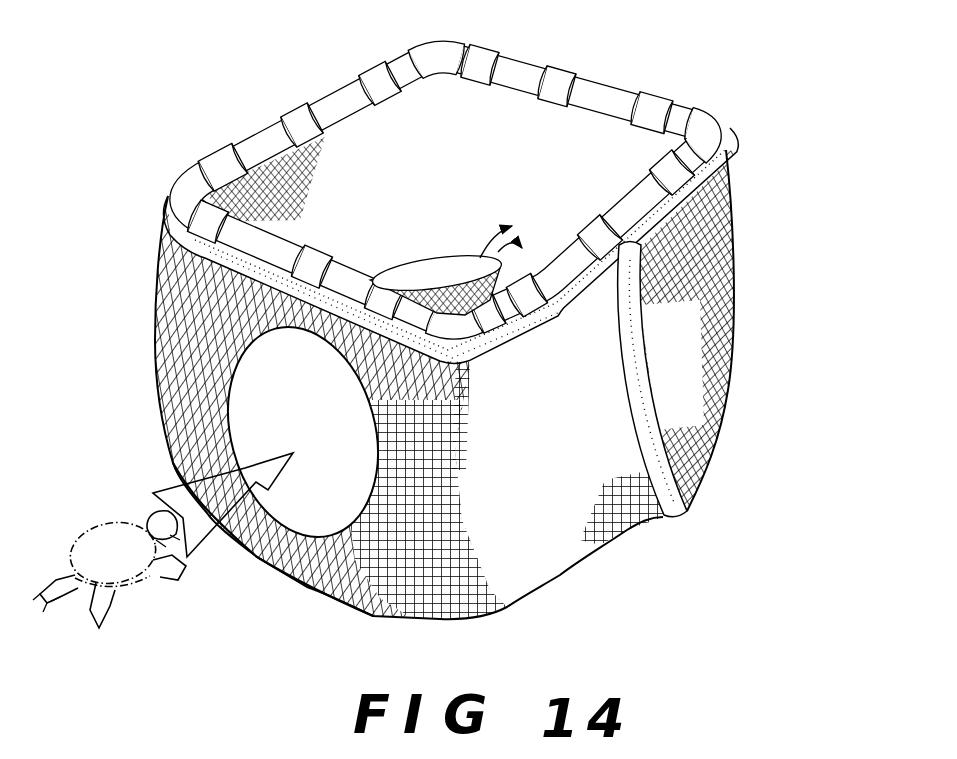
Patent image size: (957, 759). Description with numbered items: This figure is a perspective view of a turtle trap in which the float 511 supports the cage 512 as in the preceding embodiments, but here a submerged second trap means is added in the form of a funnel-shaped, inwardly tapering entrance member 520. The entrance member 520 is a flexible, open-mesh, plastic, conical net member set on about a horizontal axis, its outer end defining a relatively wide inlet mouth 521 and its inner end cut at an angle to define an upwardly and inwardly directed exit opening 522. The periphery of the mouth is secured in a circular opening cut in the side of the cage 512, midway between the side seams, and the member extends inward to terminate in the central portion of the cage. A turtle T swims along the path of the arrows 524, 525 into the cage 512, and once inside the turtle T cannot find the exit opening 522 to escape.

The float 511 is at (609, 82).
The cage 512 is at (735, 281).
The entrance member 520 is at (417, 266).
The mouth 521 is at (166, 438).
The exit opening 522 is at (459, 262).
The arrow 524 is at (197, 541).
The arrow 525 is at (496, 232).
The turtle T is at (137, 547).